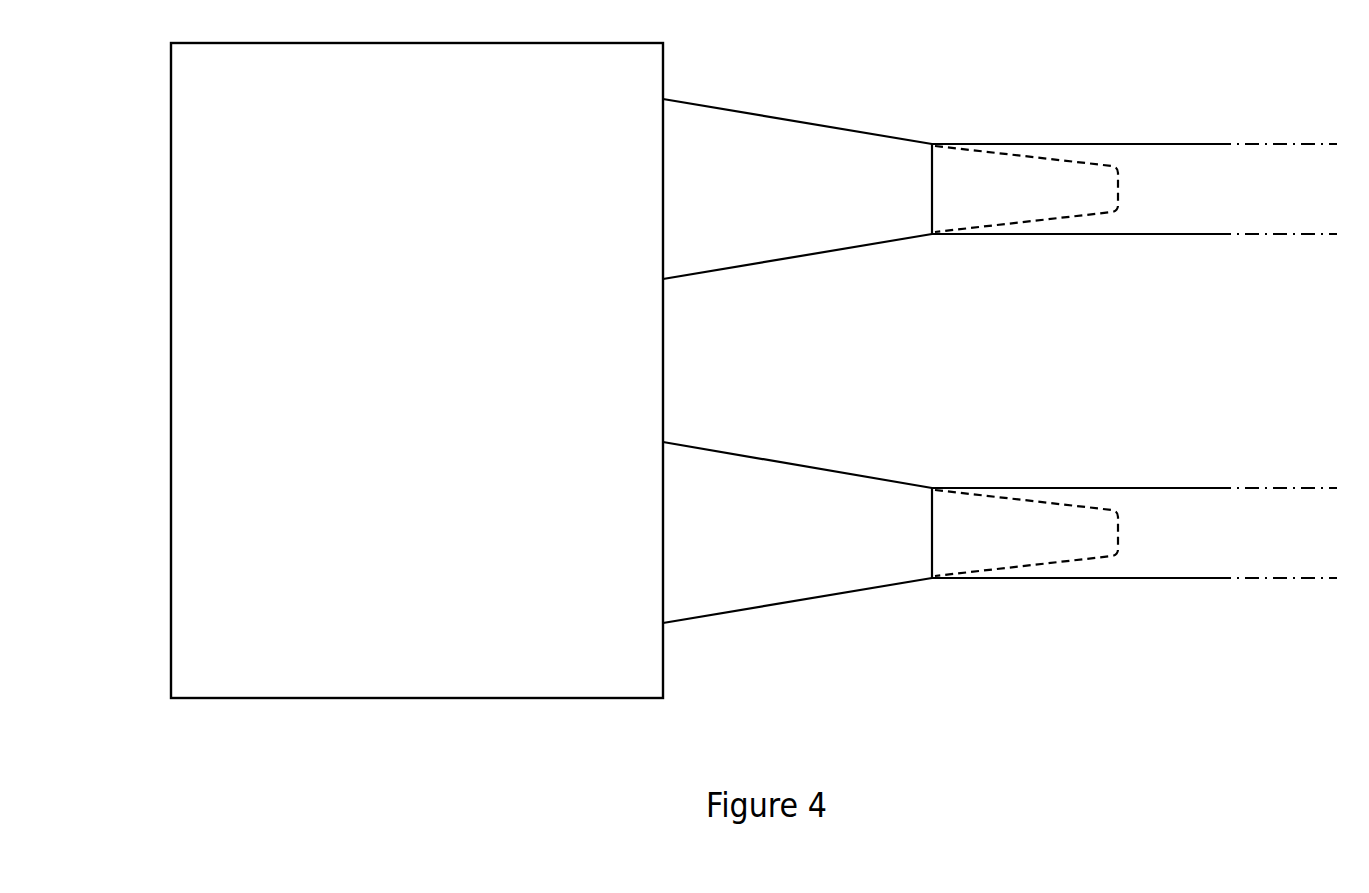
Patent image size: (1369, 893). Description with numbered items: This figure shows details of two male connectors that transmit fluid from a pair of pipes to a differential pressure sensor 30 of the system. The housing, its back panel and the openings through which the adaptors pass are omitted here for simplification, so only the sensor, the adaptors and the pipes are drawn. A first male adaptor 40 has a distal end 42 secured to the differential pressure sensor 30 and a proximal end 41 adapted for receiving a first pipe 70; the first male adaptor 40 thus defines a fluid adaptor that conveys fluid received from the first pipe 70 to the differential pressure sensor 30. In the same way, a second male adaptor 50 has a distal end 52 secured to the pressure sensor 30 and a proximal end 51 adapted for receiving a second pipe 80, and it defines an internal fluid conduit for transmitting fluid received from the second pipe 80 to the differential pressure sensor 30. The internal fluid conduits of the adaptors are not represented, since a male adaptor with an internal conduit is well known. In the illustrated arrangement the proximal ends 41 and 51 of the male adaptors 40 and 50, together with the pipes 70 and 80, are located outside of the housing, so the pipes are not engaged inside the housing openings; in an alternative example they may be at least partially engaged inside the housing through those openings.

The differential pressure sensor 30 is at (435, 617).
The first male adaptor 40 is at (874, 133).
The proximal end 41 is at (1047, 199).
The distal end 42 is at (711, 201).
The second male adaptor 50 is at (874, 476).
The proximal end 51 is at (1047, 545).
The distal end 52 is at (711, 544).
The first pipe 70 is at (1262, 199).
The second pipe 80 is at (1262, 545).